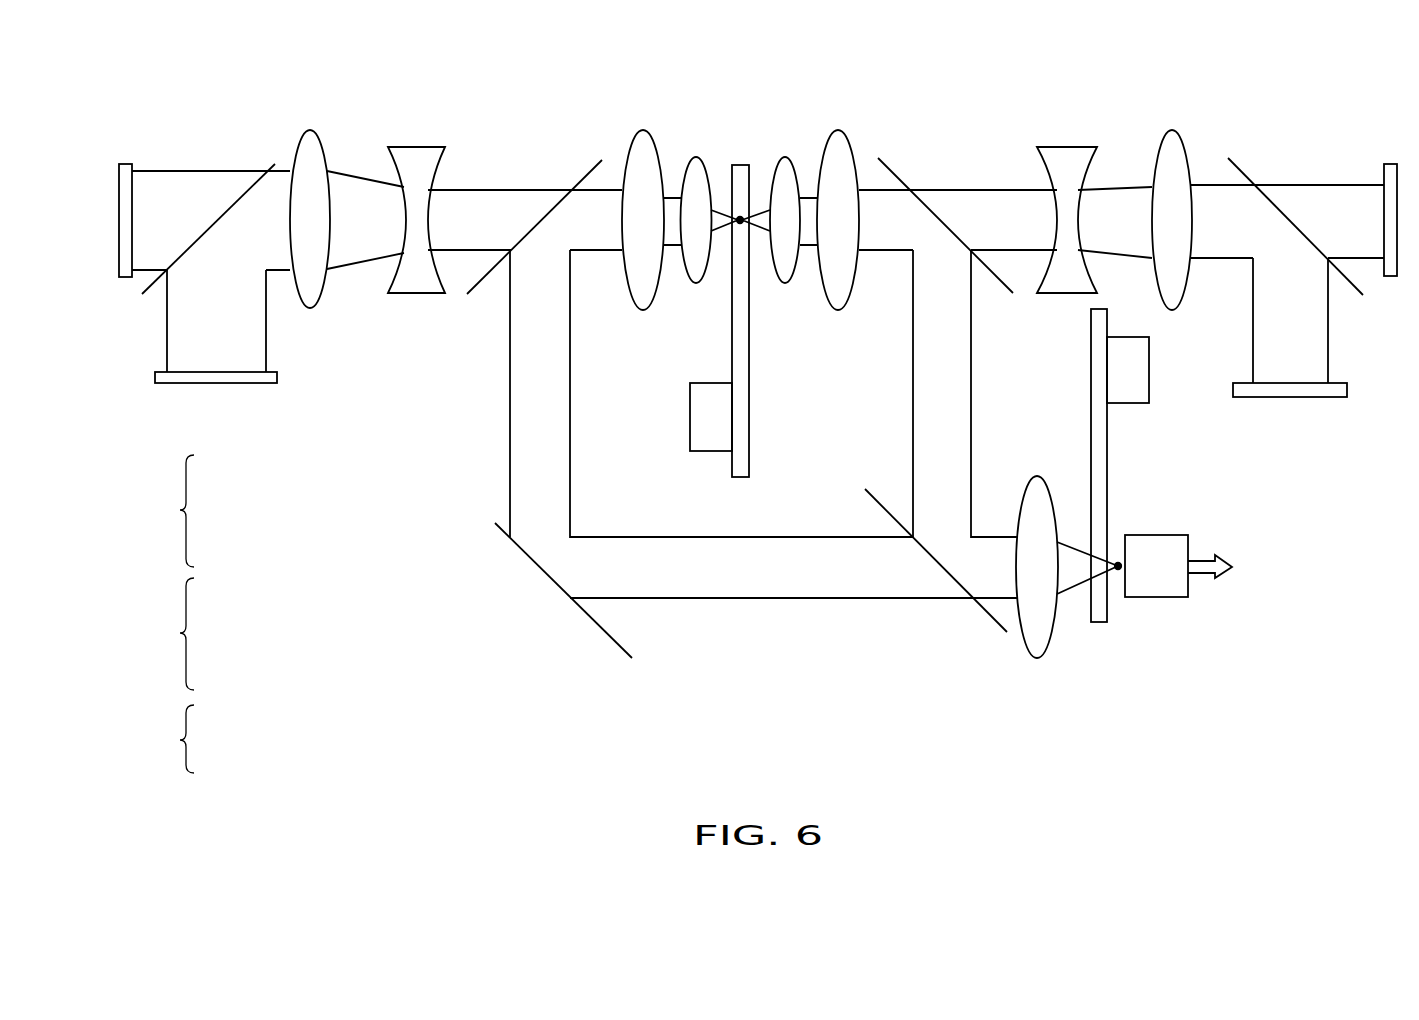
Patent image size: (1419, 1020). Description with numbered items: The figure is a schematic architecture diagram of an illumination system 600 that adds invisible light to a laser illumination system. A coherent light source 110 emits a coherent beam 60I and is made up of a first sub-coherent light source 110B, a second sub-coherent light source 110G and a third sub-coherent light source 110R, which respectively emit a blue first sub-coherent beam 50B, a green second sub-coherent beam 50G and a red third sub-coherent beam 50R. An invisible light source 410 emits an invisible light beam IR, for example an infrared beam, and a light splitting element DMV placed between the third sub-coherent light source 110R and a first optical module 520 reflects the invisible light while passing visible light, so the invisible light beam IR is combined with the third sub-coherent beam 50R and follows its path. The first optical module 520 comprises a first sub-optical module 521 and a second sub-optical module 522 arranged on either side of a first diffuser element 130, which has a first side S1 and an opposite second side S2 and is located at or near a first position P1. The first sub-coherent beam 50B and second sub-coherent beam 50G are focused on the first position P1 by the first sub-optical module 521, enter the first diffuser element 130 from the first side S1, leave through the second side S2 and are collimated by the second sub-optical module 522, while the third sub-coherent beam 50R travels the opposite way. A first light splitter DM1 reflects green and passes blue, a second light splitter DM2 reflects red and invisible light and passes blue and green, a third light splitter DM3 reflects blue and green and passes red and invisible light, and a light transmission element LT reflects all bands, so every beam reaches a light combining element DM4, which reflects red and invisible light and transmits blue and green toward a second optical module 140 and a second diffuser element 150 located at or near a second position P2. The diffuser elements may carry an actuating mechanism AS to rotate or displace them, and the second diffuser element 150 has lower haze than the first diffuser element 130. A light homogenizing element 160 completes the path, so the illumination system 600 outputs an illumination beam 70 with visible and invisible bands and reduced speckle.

The third sub-coherent light source 110R is at (127, 162).
The third sub-coherent beam 50R is at (163, 178).
The light splitting element DMV is at (270, 160).
The invisible light beam IR is at (243, 336).
The invisible light source 410 is at (272, 378).
The third light splitter DM3 is at (585, 170).
The second sub-optical module 522 is at (696, 170).
The first diffuser element 130 is at (740, 165).
The first position P1 is at (742, 217).
The first sub-optical module 521 is at (838, 160).
The second light splitter DM2 is at (895, 170).
The first light splitter DM1 is at (1237, 163).
The first sub-coherent beam 50B is at (1318, 203).
The first sub-coherent light source 110B is at (1390, 178).
The second sub-coherent beam 50G is at (1273, 335).
The second sub-coherent light source 110G is at (1243, 388).
The first side S1 is at (751, 343).
The second side S2 is at (722, 349).
The actuating mechanism AS is at (688, 420).
The light combining element DM4 is at (882, 507).
The light transmission element LT is at (605, 636).
The second optical module 140 is at (1040, 582).
The second diffuser element 150 is at (1097, 478).
The second position P2 is at (1115, 575).
The light homogenizing element 160 is at (1160, 577).
The illumination beam 70 is at (1203, 577).
The coherent light source 110 is at (191, 511).
The coherent beam 60I is at (190, 634).
The first optical module 520 is at (185, 740).
The illumination system 600 is at (1382, 759).